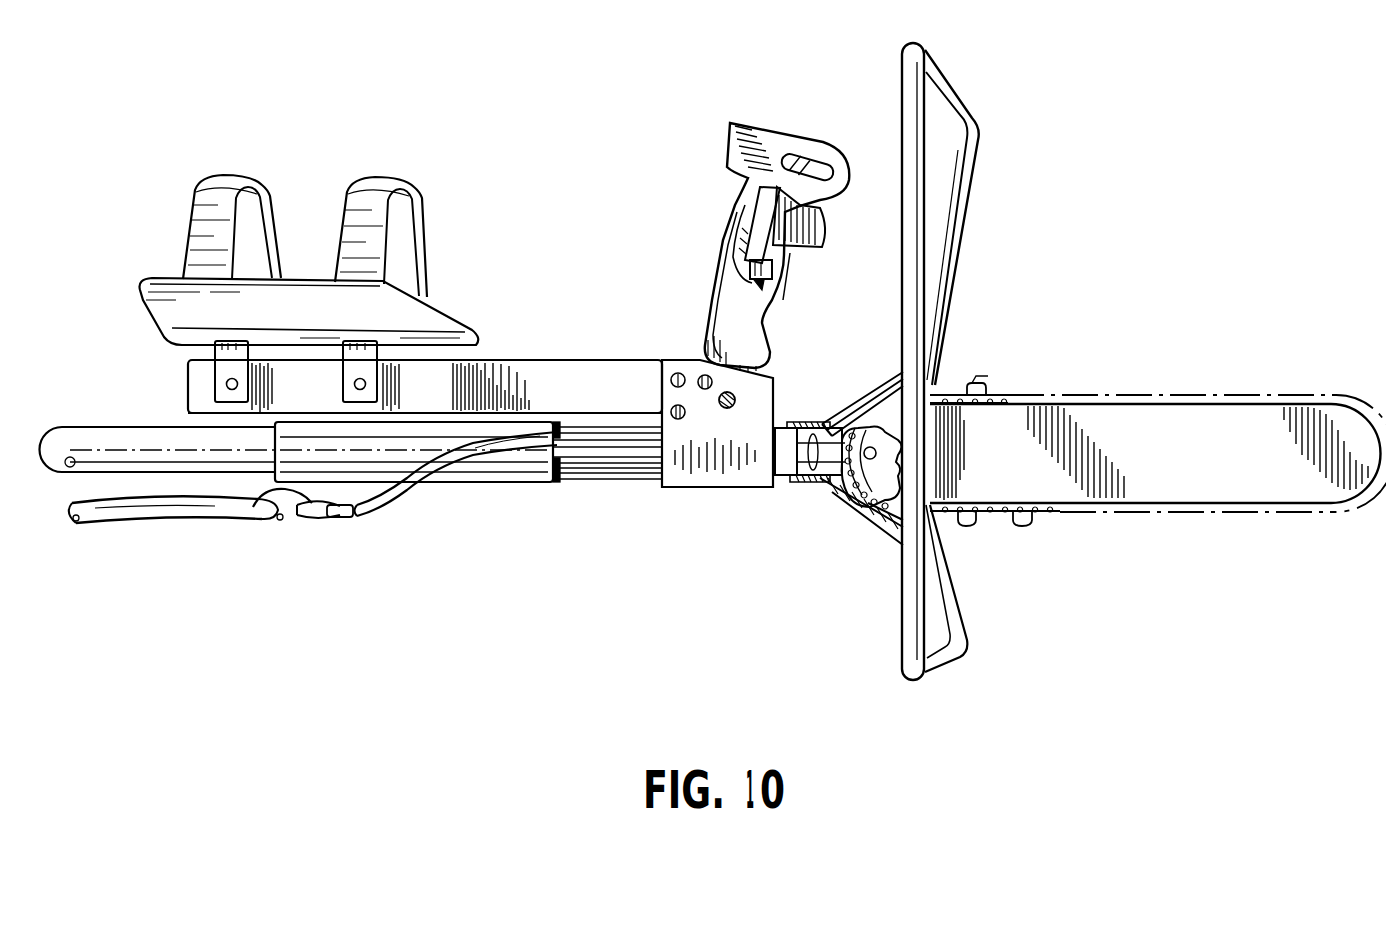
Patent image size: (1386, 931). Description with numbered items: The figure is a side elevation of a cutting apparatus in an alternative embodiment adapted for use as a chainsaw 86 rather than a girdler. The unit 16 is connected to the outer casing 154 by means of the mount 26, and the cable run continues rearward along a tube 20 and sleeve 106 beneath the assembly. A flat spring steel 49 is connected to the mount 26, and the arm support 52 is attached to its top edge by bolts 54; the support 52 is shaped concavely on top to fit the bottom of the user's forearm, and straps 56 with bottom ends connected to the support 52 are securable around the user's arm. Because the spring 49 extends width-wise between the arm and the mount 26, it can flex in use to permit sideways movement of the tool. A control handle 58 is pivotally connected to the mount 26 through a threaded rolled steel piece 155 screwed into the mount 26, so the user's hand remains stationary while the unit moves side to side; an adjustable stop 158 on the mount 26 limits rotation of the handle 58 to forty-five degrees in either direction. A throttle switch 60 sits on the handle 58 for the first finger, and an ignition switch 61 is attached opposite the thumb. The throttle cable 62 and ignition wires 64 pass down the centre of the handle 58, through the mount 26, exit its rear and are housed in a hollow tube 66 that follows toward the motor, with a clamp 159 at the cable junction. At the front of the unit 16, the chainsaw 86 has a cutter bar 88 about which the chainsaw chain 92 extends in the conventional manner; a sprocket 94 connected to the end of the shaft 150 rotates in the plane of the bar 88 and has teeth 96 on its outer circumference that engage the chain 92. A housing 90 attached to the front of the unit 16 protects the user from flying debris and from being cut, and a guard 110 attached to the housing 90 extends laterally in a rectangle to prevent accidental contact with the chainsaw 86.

The unit 16 is at (573, 391).
The tube 20 is at (100, 440).
The mount 26 is at (760, 388).
The flat spring steel 49 is at (541, 382).
The arm support 52 is at (428, 318).
The bolts 54 is at (225, 383).
The straps 56 is at (228, 186).
The control handle 58 is at (730, 292).
The throttle switch 60 is at (808, 228).
The ignition switch 61 is at (792, 155).
The throttle cable 62 is at (315, 520).
The ignition wires 64 is at (253, 507).
The hollow tube 66 is at (420, 487).
The chainsaw 86 is at (1028, 382).
The cutter bar 88 is at (1140, 430).
The housing 90 is at (887, 393).
The chainsaw chain 92 is at (1035, 526).
The sprocket 94 is at (866, 485).
The teeth 96 is at (878, 520).
The sleeve 106 is at (510, 465).
The guard 110 is at (947, 88).
The shaft 150 is at (826, 460).
The outer casing 154 is at (600, 460).
The rolled steel piece 155 is at (772, 268).
The adjustable stop 158 is at (734, 403).
The cable clamp 159 is at (340, 522).